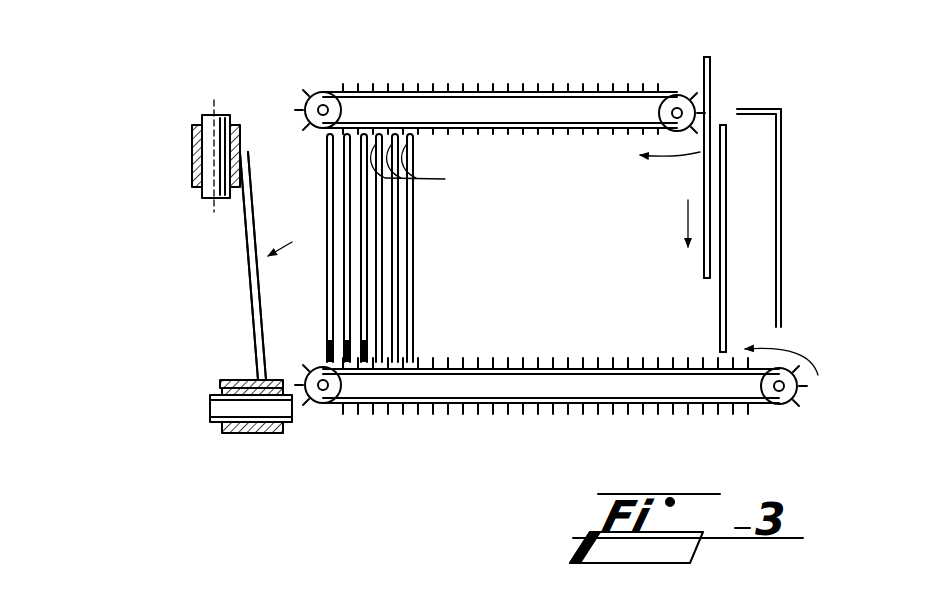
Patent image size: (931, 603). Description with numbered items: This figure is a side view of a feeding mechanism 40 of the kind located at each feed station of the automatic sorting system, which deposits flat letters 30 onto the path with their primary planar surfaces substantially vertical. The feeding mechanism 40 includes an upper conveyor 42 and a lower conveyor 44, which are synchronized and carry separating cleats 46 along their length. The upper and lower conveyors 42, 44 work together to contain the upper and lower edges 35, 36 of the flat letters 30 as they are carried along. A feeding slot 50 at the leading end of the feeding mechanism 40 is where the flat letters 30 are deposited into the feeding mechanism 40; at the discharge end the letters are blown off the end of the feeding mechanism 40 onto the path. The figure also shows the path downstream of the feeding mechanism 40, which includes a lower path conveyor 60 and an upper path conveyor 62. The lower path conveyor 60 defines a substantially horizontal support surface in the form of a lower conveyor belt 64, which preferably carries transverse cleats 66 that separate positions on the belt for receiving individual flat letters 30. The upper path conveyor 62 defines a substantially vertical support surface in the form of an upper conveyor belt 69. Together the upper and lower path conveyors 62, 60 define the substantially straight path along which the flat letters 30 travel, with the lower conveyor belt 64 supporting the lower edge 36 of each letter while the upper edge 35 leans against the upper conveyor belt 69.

The flat letters 30 is at (413, 216).
The upper edge 35 is at (255, 150).
The lower edge 36 is at (364, 350).
The feeding mechanism 40 is at (462, 32).
The upper conveyor 42 is at (330, 75).
The lower conveyor 44 is at (349, 424).
The separating cleats 46 is at (535, 88).
The feeding slot 50 is at (727, 108).
The lower path conveyor 60 is at (201, 399).
The upper path conveyor 62 is at (172, 129).
The lower conveyor belt 64 is at (218, 392).
The transverse cleats 66 is at (247, 380).
The upper conveyor belt 69 is at (242, 125).